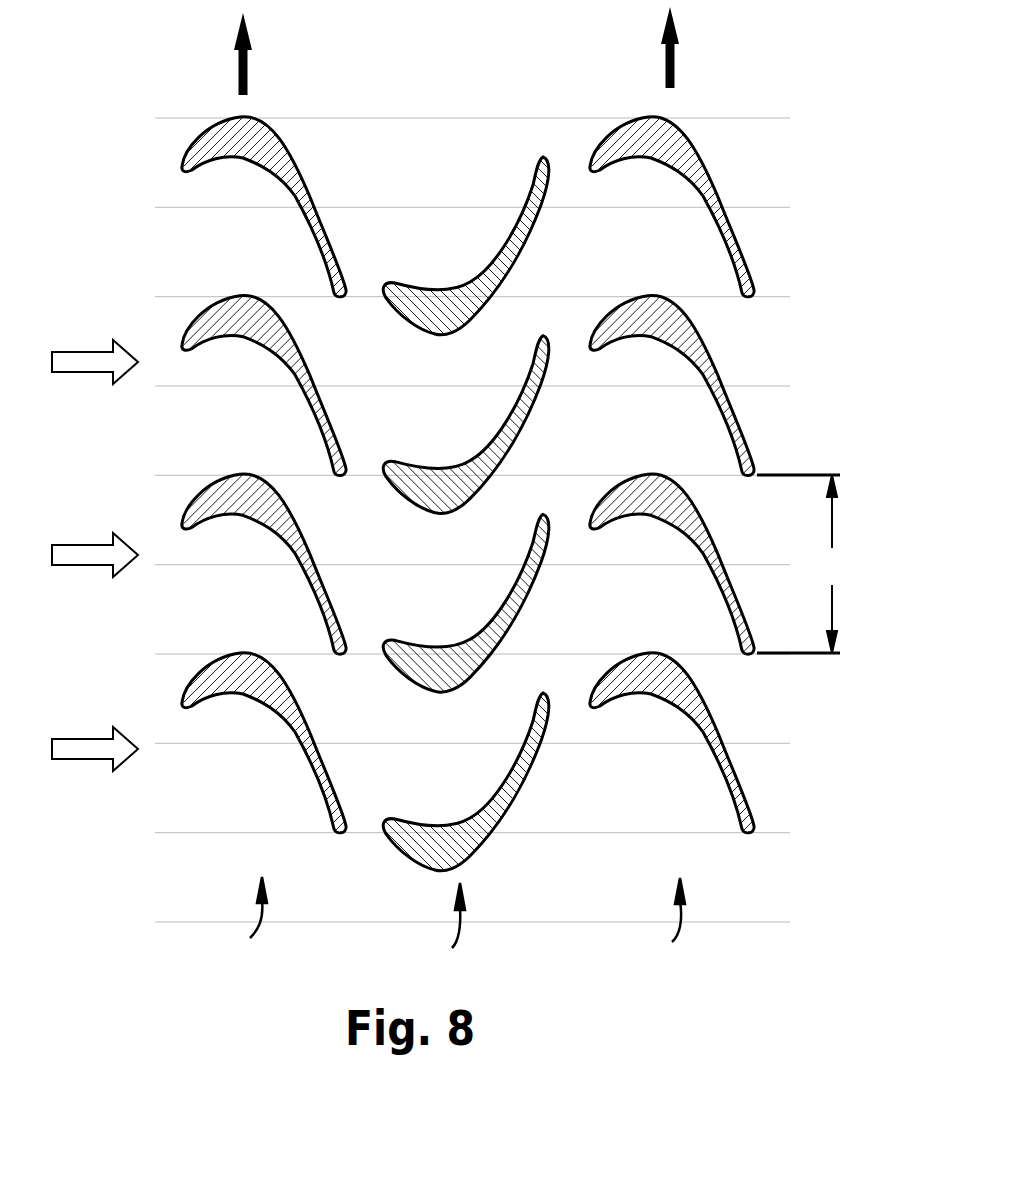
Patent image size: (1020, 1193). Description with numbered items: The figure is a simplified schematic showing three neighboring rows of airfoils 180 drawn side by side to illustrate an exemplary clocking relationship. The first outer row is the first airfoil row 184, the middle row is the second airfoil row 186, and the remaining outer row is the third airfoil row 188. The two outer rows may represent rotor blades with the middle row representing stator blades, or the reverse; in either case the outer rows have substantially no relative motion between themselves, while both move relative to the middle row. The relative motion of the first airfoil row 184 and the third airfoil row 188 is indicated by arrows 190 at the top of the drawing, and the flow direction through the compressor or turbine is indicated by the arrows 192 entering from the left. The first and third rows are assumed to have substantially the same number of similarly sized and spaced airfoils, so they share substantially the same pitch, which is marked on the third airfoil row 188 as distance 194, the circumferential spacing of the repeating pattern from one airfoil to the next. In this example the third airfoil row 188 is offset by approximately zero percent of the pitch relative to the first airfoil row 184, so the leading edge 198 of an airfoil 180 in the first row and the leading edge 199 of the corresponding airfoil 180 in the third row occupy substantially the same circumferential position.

The airfoil 180 is at (705, 150).
The first airfoil row 184 is at (237, 916).
The second airfoil row 186 is at (435, 923).
The third airfoil row 188 is at (655, 917).
The arrows 190 is at (243, 70).
The arrows 192 is at (85, 352).
The distance 194 is at (803, 564).
The leading edge 198 is at (183, 345).
The leading edge 199 is at (591, 347).